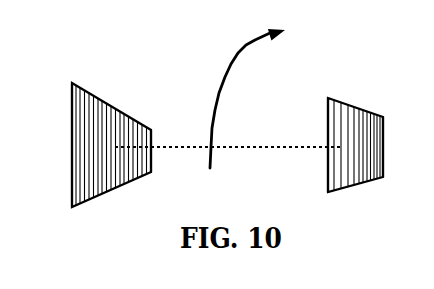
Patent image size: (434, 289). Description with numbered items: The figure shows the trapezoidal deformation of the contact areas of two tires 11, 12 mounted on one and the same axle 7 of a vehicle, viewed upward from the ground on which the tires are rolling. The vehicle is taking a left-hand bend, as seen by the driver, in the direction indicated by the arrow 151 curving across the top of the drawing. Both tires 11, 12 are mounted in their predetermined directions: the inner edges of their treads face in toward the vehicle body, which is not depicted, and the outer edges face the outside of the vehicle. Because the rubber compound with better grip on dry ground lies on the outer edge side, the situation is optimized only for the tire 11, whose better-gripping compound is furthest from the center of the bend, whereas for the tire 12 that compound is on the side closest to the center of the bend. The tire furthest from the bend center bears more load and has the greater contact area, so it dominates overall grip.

The axle 7 is at (243, 148).
The tire 11 is at (121, 95).
The tire 12 is at (354, 95).
The arrow 151 is at (233, 63).